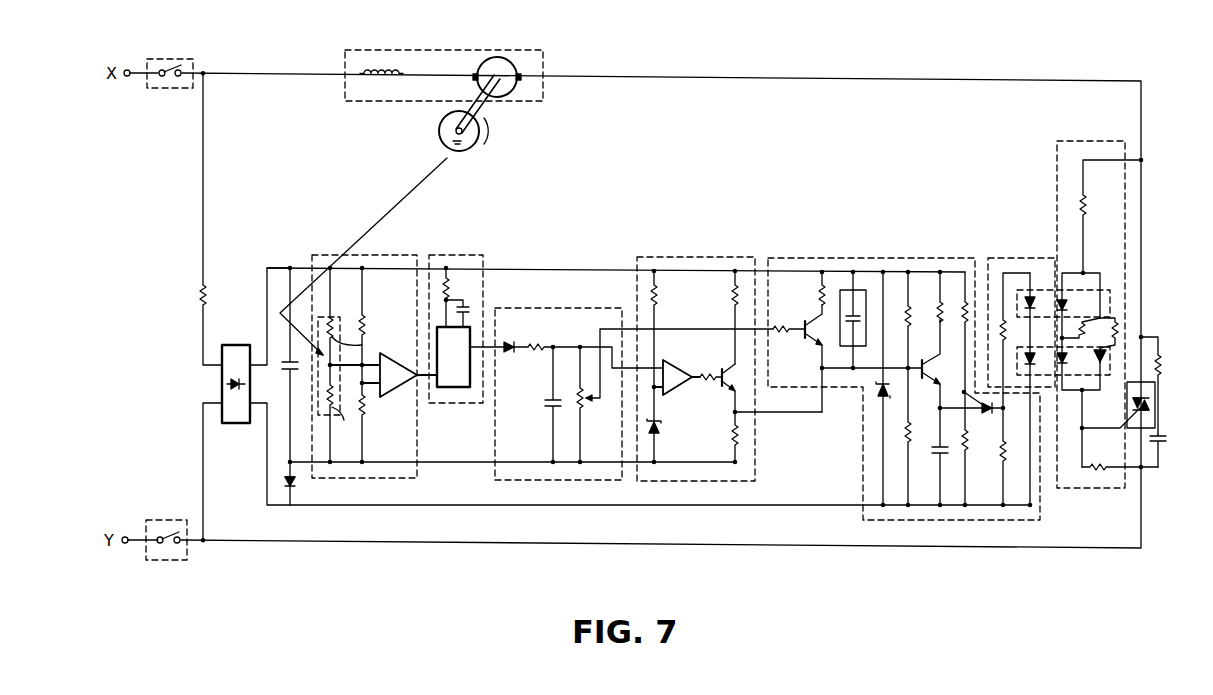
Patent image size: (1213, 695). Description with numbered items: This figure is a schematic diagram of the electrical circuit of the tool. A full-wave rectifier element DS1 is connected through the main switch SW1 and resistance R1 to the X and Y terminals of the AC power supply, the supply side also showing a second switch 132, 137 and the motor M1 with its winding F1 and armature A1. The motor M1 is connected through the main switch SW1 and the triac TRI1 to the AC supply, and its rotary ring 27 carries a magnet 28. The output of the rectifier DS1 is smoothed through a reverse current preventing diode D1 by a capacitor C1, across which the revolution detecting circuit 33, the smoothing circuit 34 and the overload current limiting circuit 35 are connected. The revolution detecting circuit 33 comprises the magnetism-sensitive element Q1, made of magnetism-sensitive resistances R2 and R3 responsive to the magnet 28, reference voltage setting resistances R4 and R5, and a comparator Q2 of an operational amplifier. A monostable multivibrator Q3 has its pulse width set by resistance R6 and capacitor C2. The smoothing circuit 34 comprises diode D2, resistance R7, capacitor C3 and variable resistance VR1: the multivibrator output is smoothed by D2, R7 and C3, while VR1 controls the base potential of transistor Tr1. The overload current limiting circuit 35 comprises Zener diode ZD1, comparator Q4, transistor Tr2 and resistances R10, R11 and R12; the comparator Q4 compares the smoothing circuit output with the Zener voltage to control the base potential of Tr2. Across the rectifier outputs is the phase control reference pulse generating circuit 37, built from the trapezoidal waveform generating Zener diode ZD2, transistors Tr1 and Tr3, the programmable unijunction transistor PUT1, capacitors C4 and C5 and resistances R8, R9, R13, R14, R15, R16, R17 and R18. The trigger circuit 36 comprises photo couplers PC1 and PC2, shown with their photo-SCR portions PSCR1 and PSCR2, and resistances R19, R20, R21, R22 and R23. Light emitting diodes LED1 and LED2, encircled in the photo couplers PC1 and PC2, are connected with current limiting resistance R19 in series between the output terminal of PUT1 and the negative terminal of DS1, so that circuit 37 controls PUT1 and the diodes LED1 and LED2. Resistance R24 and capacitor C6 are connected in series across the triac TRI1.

The main switch SW1 is at (160, 59).
The switch 132 is at (189, 556).
The switch 137 is at (156, 562).
The motor M1 is at (412, 49).
The fuse/field coil F1 is at (381, 62).
The armature A1 is at (486, 75).
The rotary ring 27 is at (439, 132).
The magnet 28 is at (476, 147).
The resistance R1 is at (215, 219).
The full-wave rectifier element DS1 is at (234, 374).
The reverse current preventing diode D1 is at (302, 483).
The revolution detecting circuit 33 is at (399, 254).
The capacitor C1 is at (299, 365).
The magnetism-sensitive element Q1 is at (343, 328).
The magnetism-sensitive resistance R2 is at (361, 344).
The magnetism-sensitive resistance R3 is at (338, 431).
The reference voltage setting resistance R4 is at (375, 315).
The reference voltage setting resistance R5 is at (375, 414).
The comparator Q2 is at (383, 370).
The monostable multivibrator Q3 is at (470, 254).
The resistance R6 is at (457, 297).
The capacitor C2 is at (464, 308).
The smoothing circuit 34 is at (550, 306).
The diode D2 is at (499, 337).
The resistance R7 is at (594, 345).
The capacitor C3 is at (542, 405).
The variable resistance VR1 is at (675, 396).
The overload current limiting circuit 35 is at (698, 255).
The resistance R11 is at (671, 328).
The resistance R10 is at (720, 316).
The comparator Q4 is at (677, 368).
The resistance R12 is at (712, 367).
The transistor Tr2 is at (762, 414).
The Zener diode ZD1 is at (671, 425).
The phase control reference pulse generating circuit 37 is at (903, 256).
The resistance R13 is at (787, 318).
The transistor Tr1 is at (806, 358).
The resistance R9 is at (810, 288).
The capacitor C5 is at (865, 320).
The trapezoidal wave form generating Zener diode ZD2 is at (878, 396).
The resistance R8 is at (919, 320).
The resistance R14 is at (924, 437).
The transistor Tr3 is at (924, 364).
The resistance R15 is at (927, 296).
The capacitor C4 is at (929, 457).
The resistance R16 is at (963, 299).
The resistance R17 is at (980, 449).
The programmable unijunction transistor PUT1 is at (973, 413).
The resistance R18 is at (989, 457).
The current limiting resistance R19 is at (1000, 320).
The photo-SCR coupler PSCR1 is at (1070, 256).
The light emitting diode LED1 is at (1030, 297).
The light emitting diode LED2 is at (1035, 366).
The trigger circuit 36 is at (1053, 158).
The resistance R20 is at (1111, 217).
The photo coupler PC1 is at (1108, 290).
The resistance R22 is at (1112, 292).
The resistance R23 is at (1120, 322).
The photo coupler PC2 is at (1098, 407).
The photo-SCR coupler PSCR2 is at (1098, 360).
The resistance R21 is at (1120, 458).
The triac TRI1 is at (1148, 395).
The resistance R24 is at (1168, 384).
The capacitor C6 is at (1170, 450).